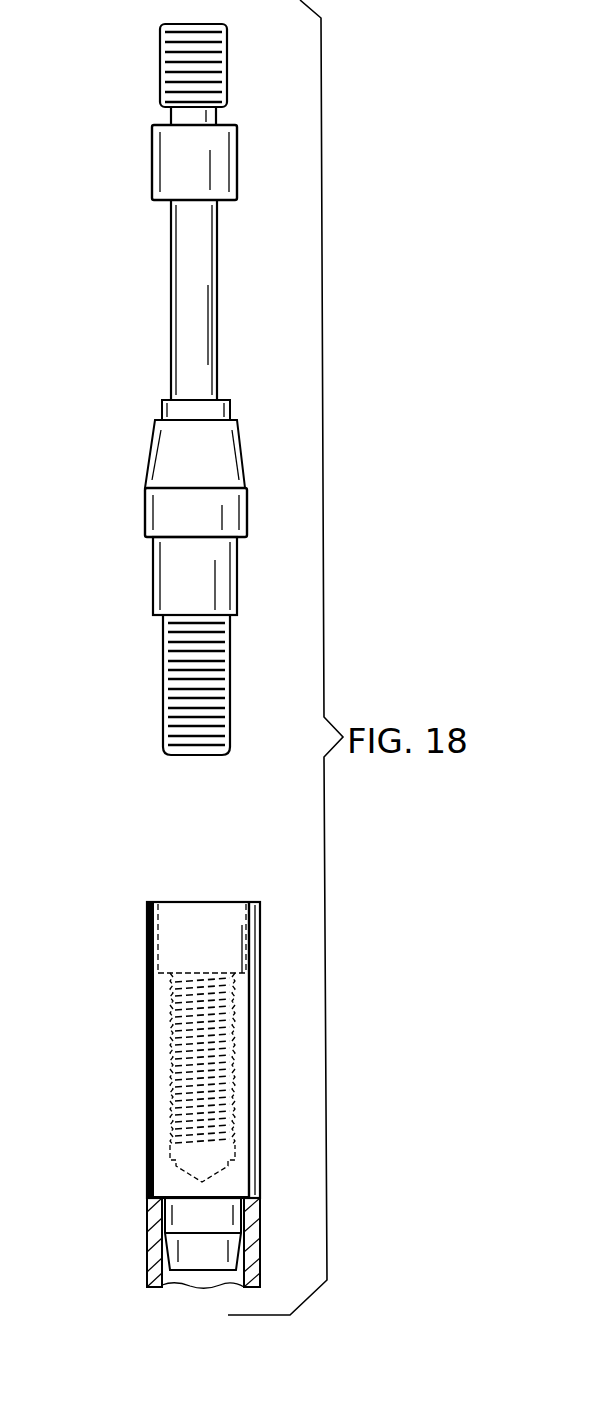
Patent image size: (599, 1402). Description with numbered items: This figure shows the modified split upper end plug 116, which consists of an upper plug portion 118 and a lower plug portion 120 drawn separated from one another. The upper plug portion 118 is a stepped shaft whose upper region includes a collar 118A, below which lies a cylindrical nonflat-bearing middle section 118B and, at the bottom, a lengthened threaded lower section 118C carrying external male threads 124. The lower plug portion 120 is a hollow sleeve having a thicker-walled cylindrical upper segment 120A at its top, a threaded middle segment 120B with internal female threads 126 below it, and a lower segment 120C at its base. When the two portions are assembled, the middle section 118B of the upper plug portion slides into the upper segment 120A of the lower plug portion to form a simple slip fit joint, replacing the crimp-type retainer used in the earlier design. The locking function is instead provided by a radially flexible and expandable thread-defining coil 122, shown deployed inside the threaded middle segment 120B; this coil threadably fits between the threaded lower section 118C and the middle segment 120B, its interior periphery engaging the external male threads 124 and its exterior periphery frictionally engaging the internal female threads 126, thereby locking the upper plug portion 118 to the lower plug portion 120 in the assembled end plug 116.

The modified split upper end plug 116 is at (333, 726).
The upper plug portion 118 is at (143, 417).
The bolt collar 118A is at (152, 165).
The cylindrical nonflat-bearing middle section 118B is at (154, 572).
The threaded lower section 118C is at (163, 717).
The external male threads 124 is at (168, 664).
The lower plug portion 120 is at (141, 877).
The cylindrical upper segment 120A is at (147, 949).
The thread-defining coil 122 is at (170, 1084).
The internal female threads 126 is at (172, 1133).
The threaded middle segment 120B is at (147, 1172).
The socket flange 120C is at (162, 1245).